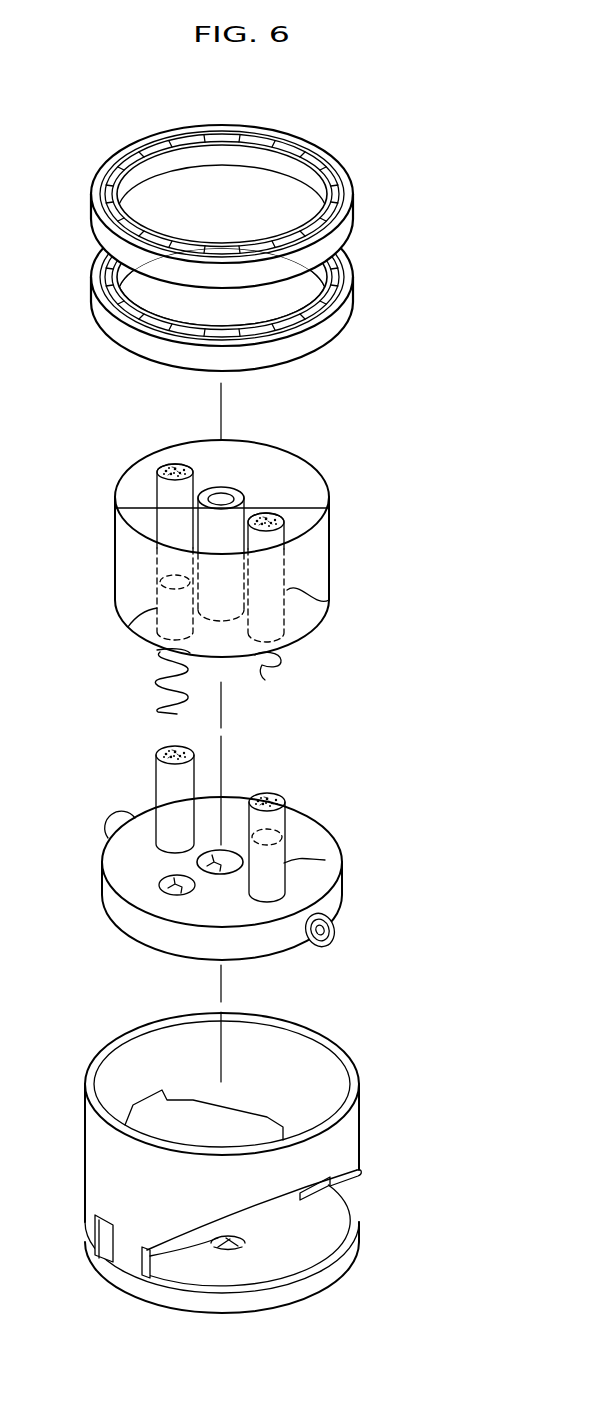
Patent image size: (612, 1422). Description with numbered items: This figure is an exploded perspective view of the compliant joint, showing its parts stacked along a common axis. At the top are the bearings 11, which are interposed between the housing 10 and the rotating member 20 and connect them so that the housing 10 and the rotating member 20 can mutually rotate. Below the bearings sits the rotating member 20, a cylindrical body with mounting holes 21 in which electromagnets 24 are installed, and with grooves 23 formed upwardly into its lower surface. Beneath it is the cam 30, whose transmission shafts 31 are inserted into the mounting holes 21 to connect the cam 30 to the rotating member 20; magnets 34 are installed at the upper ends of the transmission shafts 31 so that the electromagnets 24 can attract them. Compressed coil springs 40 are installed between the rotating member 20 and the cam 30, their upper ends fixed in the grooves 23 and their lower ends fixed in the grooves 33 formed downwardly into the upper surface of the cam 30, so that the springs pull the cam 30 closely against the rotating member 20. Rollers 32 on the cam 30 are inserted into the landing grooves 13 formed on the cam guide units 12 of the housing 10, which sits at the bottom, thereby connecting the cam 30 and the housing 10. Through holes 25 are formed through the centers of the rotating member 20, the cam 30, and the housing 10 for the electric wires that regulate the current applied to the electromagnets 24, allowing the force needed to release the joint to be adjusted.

The housing 10 is at (270, 1163).
The bearings 11 is at (352, 223).
The cam guide units 12 is at (270, 1227).
The landing grooves 13 is at (359, 1171).
The rotating member 20 is at (253, 568).
The mounting holes 21 is at (329, 600).
The grooves 23 is at (128, 627).
The electromagnets 24 is at (270, 520).
The through holes 25 is at (226, 497).
The cam 30 is at (247, 850).
The transmission shafts 31 is at (325, 860).
The rollers 32 is at (333, 926).
The grooves 33 is at (165, 888).
The magnets 34 is at (272, 798).
The compressed coil springs 40 is at (250, 657).